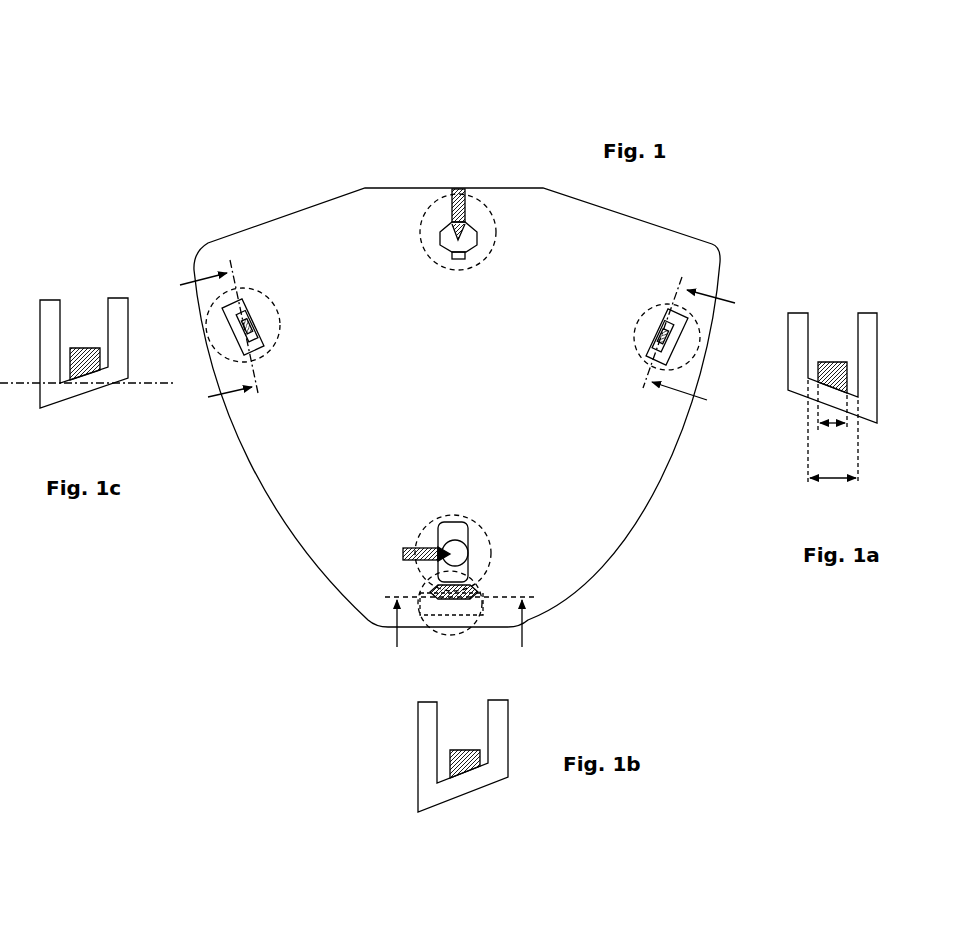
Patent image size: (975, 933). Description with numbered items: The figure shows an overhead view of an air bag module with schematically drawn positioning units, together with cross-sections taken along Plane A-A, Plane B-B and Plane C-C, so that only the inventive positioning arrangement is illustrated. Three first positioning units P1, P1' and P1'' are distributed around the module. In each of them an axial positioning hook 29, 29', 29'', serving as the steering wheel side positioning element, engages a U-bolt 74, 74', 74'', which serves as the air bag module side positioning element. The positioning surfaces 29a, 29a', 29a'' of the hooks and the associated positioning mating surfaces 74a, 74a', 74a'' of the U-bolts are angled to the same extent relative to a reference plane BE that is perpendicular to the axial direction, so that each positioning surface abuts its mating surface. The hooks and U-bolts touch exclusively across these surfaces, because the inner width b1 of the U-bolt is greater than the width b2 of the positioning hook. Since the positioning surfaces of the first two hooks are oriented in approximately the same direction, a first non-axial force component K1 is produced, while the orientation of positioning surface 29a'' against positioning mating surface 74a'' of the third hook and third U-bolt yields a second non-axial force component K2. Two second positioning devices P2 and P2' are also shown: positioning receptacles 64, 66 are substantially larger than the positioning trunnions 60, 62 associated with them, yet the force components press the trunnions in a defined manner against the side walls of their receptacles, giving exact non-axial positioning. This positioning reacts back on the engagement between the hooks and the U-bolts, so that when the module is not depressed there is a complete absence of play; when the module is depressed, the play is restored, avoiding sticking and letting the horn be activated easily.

In FIG. 1, the first non-axial force component K1 is at (455, 192).
In FIG. 1, the positioning trunnion 60 is at (450, 232).
In FIG. 1, the positioning receptacle 64 is at (474, 232).
In FIG. 1, the second positioning device P2 is at (408, 173).
In FIG. 1, the first positioning unit P1 is at (584, 198).
In FIG. 1, the Plane A- A is at (690, 337).
In FIG. 1, the first positioning unit P1'' is at (243, 249).
In FIG. 1, the Plane B- B is at (209, 343).
In FIG. 1, the positioning trunnion 62 is at (457, 560).
In FIG. 1, the positioning receptacle 66 is at (450, 532).
In FIG. 1, the second non-axial force component K2 is at (413, 557).
In FIG. 1, the second positioning device P2' is at (583, 553).
In FIG. 1, the first positioning unit P1' is at (333, 702).
In FIG. 1, the Plane C- C is at (452, 633).
In FIG. 1A, the U-bolt 74 is at (833, 324).
In FIG. 1A, the positioning mating surface 74a is at (794, 286).
In FIG. 1A, the axial positioning hook 29 is at (832, 281).
In FIG. 1A, the positioning surface 29a is at (765, 428).
In FIG. 1A, the inner width of the U-bolt b1 is at (833, 443).
In FIG. 1A, the width of the positioning hook b2 is at (832, 416).
In FIG. 1C, the U-bolt 74' is at (114, 353).
In FIG. 1C, the positioning mating surface 74a' is at (49, 276).
In FIG. 1C, the axial positioning hook 29' is at (97, 296).
In FIG. 1C, the positioning surface 29a' is at (135, 417).
In FIG. 1C, the reference plane BE is at (143, 387).
In FIG. 1B, the U-bolt 74'' is at (532, 748).
In FIG. 1B, the positioning mating surface 74a'' is at (470, 705).
In FIG. 1B, the axial positioning hook 29'' is at (386, 792).
In FIG. 1B, the positioning surface 29a'' is at (494, 827).